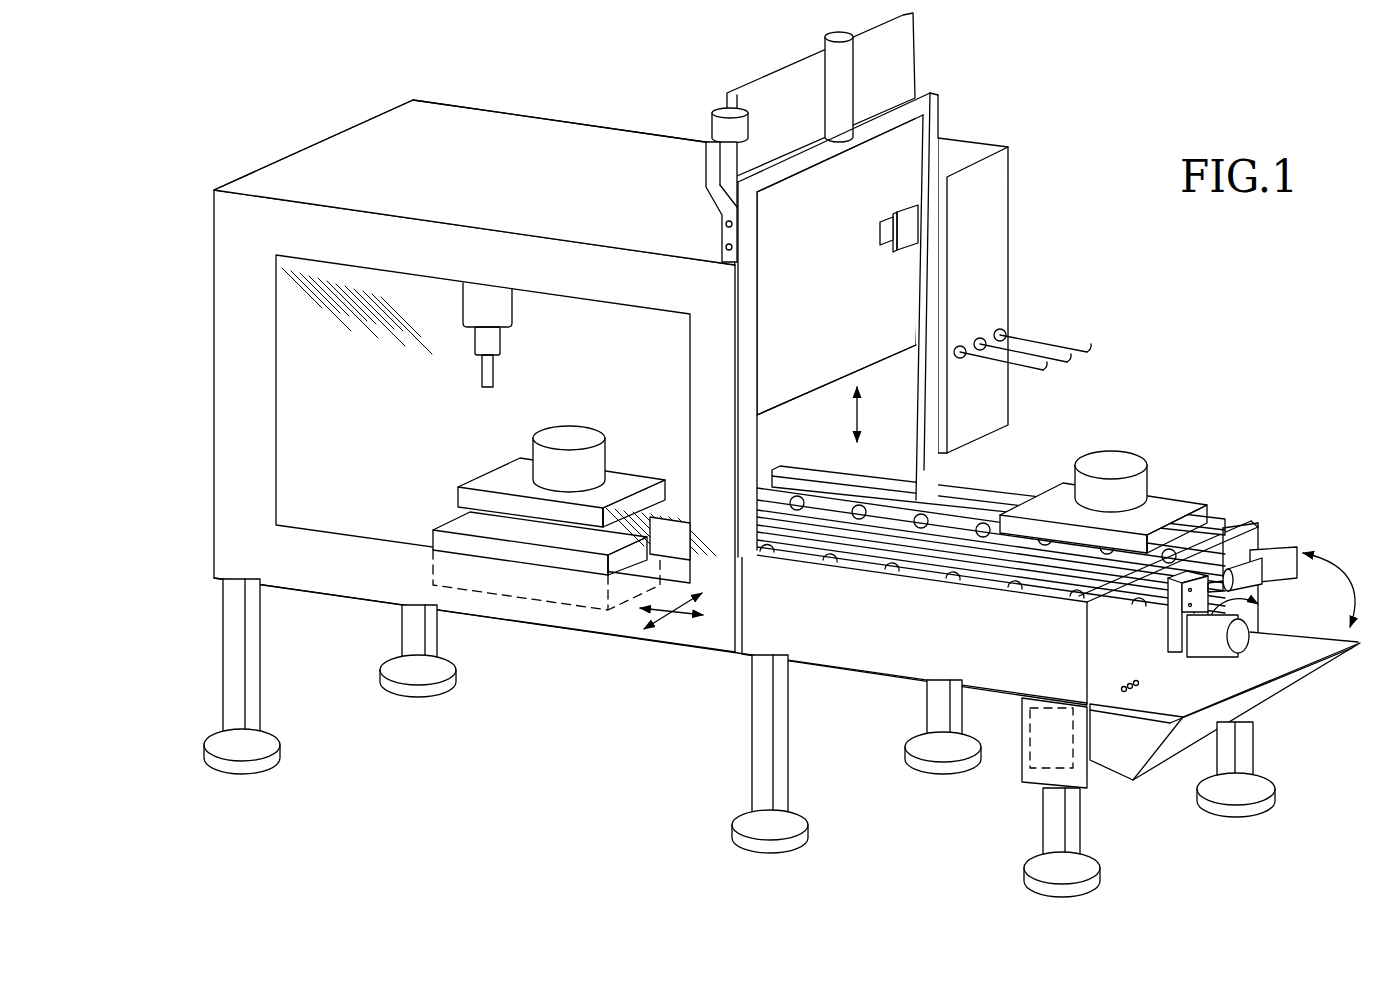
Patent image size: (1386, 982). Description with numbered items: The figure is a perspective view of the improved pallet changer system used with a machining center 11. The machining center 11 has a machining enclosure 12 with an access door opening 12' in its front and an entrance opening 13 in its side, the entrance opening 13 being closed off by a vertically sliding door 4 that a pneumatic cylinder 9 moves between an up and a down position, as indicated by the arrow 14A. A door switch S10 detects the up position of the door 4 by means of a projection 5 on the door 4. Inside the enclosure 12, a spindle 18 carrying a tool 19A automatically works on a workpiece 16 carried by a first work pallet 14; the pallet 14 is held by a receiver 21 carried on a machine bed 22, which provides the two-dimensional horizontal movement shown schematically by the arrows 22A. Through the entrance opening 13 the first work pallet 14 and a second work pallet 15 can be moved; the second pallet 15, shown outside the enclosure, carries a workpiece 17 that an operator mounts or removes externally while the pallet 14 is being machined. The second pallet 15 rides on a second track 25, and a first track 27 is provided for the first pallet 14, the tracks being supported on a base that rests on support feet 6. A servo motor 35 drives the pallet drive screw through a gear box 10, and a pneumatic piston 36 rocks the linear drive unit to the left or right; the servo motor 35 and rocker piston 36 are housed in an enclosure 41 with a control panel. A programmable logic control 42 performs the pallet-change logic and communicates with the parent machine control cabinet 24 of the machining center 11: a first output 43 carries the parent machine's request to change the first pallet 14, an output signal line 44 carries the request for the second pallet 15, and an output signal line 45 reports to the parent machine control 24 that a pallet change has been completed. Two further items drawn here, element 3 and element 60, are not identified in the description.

The machining center 11 is at (207, 205).
The machining enclosure 12 is at (474, 174).
The access door opening 12' is at (424, 419).
The spindle 18 is at (493, 343).
The tool 19A is at (490, 380).
The receiver 21 is at (508, 525).
The first work pallet 14 is at (638, 482).
The workpiece 16 is at (585, 442).
The machine bed 22 is at (548, 607).
The two dimensional horizontal movement 22A is at (665, 619).
The pneumatic cylinder 9 is at (843, 83).
The entrance opening 13 is at (872, 378).
The arrow 14A is at (848, 410).
The vertically sliding door 4 is at (914, 218).
The projection 5 is at (880, 231).
The door switch S10 is at (900, 297).
The sensor column 60 is at (712, 128).
The parent machine control cabinet 24 is at (1000, 258).
The first output 43 is at (960, 350).
The output signal line 44 is at (980, 344).
The output signal line 45 is at (1000, 335).
The base 3 is at (795, 607).
The second track 25 is at (967, 512).
The first track 27 is at (923, 570).
The second work pallet 15 is at (1178, 507).
The workpiece 17 is at (1116, 460).
The gear box 10 is at (1173, 625).
The servo motor 35 is at (1218, 650).
The pneumatic piston 36 is at (1242, 565).
The enclosure 41 is at (1270, 698).
The programmable logic control 42 is at (1053, 748).
The support feet 6 is at (780, 733).